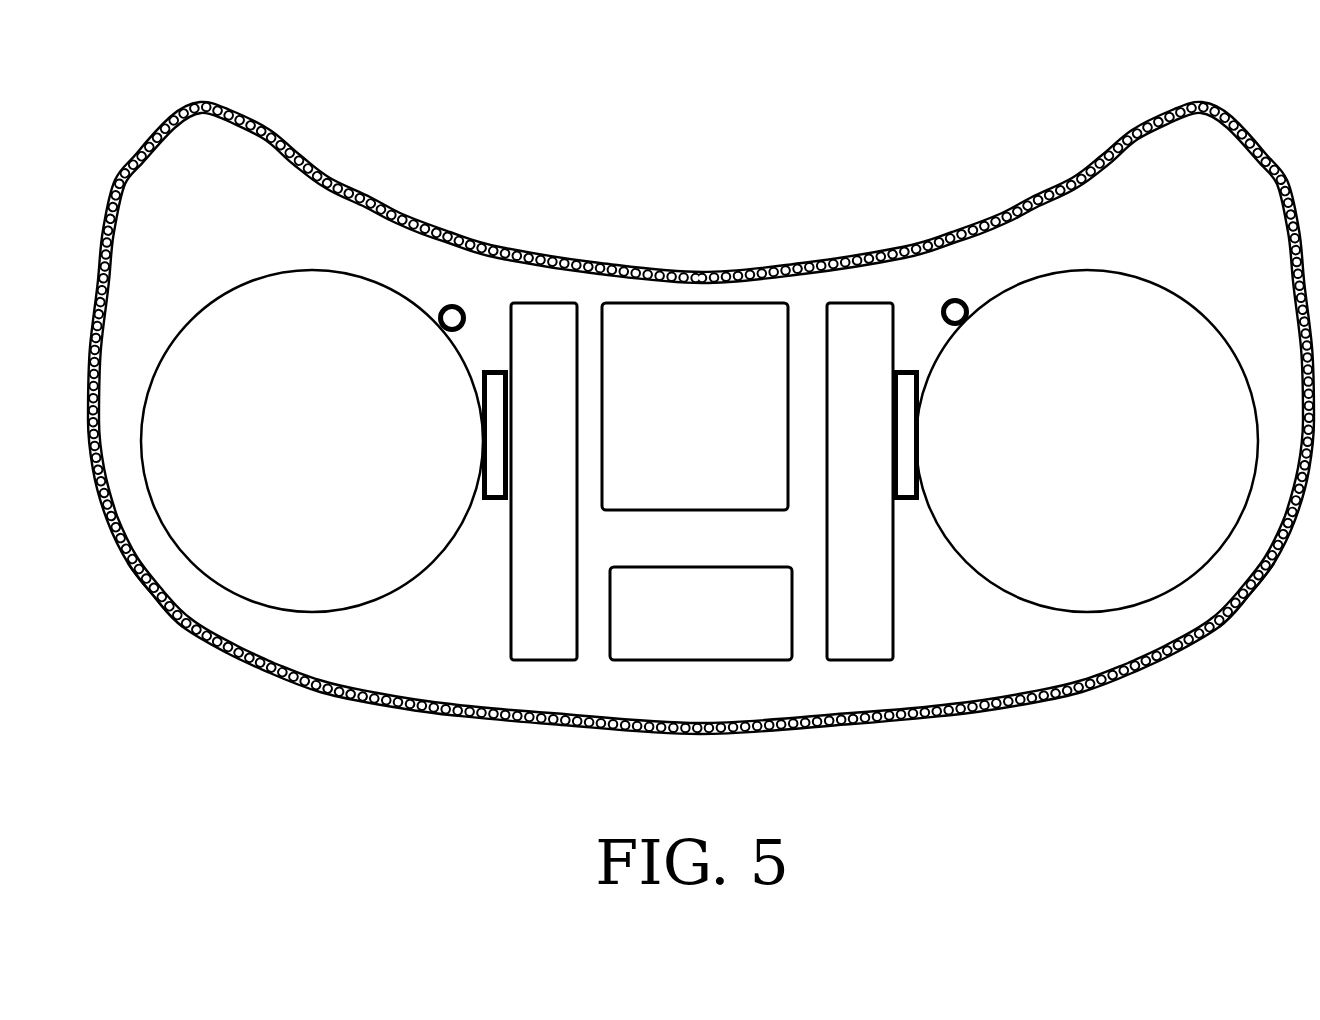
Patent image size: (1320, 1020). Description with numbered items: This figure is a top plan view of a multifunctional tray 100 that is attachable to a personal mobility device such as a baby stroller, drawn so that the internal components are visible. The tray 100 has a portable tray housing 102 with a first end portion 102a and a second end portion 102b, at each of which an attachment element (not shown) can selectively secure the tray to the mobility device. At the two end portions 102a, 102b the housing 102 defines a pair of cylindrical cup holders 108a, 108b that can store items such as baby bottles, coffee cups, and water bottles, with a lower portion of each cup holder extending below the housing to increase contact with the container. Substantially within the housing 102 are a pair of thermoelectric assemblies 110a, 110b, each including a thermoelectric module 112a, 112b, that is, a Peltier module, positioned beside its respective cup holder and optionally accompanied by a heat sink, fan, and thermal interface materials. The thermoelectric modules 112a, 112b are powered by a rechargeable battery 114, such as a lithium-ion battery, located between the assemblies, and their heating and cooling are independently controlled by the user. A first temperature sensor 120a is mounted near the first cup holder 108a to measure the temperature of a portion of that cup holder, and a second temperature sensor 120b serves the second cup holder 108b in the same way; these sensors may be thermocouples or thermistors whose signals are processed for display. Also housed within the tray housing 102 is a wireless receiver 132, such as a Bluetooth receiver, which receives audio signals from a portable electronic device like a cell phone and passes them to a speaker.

The multifunctional tray 100 is at (708, 166).
The portable tray housing 102 is at (955, 625).
The first end portion 102a is at (178, 625).
The second end portion 102b is at (1212, 640).
The first cup holder 108a is at (327, 453).
The second cup holder 108b is at (1112, 453).
The first thermoelectric assembly 110a is at (517, 556).
The second thermoelectric assembly 110b is at (829, 553).
The first thermoelectric module 112a is at (497, 382).
The second thermoelectric module 112b is at (903, 382).
The rechargeable battery 114 is at (665, 421).
The first temperature sensor 120a is at (452, 318).
The second temperature sensor 120b is at (955, 312).
The wireless receiver 132 is at (668, 623).